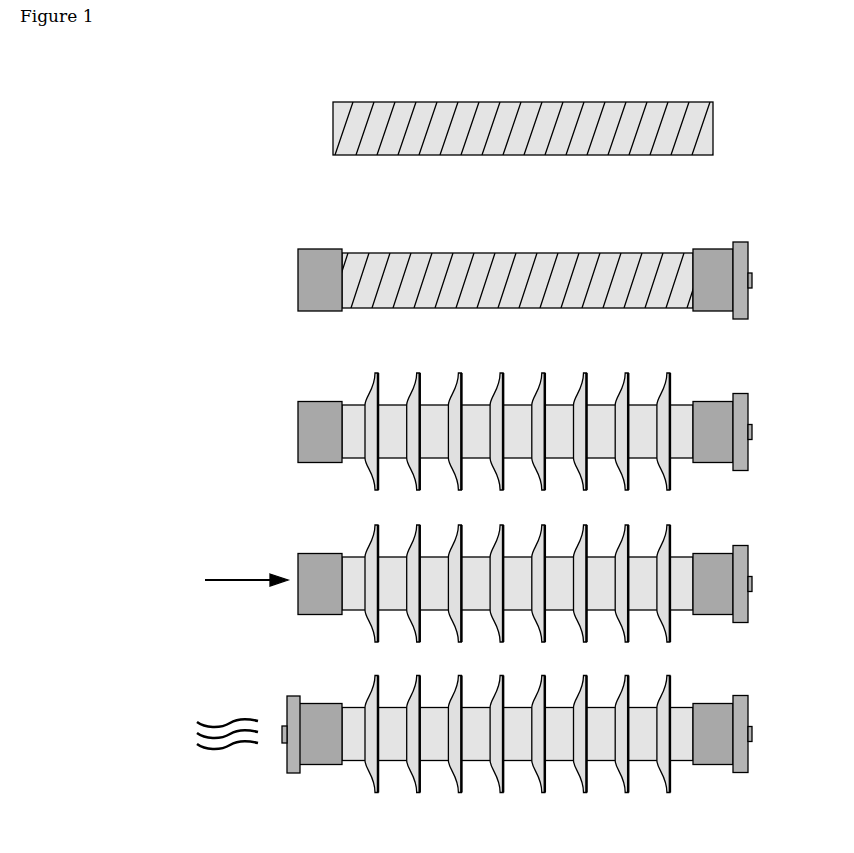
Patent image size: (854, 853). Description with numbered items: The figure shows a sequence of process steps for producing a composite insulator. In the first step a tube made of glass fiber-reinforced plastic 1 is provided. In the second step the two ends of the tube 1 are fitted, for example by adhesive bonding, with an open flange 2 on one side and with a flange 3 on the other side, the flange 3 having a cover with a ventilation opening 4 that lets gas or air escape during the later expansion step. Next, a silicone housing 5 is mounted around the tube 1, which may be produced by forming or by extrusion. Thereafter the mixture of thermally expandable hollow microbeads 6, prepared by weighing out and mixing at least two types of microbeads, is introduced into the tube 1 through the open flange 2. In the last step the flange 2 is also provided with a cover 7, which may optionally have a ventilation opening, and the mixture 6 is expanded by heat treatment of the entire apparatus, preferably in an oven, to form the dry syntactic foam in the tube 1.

The tube made of glass fiber-reinforced plastic 1 is at (583, 156).
The open flange 2 is at (321, 249).
The flange 3 is at (717, 249).
The ventilation opening 4 is at (748, 292).
The silicone housing 5 is at (458, 400).
The mixture of thermally expandable hollow microbeads 6 is at (233, 583).
The cover 7 is at (287, 710).